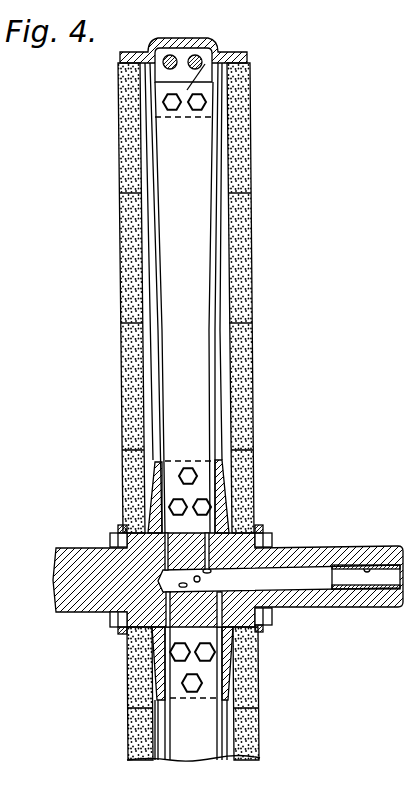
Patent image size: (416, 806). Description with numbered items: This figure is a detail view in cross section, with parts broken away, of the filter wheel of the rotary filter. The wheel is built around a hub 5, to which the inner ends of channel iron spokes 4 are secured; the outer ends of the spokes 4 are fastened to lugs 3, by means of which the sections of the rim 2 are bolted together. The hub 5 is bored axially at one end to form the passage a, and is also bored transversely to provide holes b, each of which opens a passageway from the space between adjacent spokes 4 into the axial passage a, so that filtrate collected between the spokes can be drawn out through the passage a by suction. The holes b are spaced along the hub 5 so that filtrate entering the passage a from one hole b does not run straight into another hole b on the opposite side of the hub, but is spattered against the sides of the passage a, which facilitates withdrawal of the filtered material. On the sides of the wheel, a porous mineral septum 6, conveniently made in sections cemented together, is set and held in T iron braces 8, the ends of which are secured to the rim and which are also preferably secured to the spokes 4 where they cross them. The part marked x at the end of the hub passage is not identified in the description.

The rim 2 is at (190, 40).
The lugs 3 is at (224, 49).
The channel iron spokes 4 is at (195, 148).
The hub 5 is at (160, 490).
The porous mineral septum 6 is at (245, 157).
The T iron braces 8 is at (150, 162).
The axial bore a is at (308, 580).
The transverse holes b is at (209, 552).
The insert x is at (367, 562).